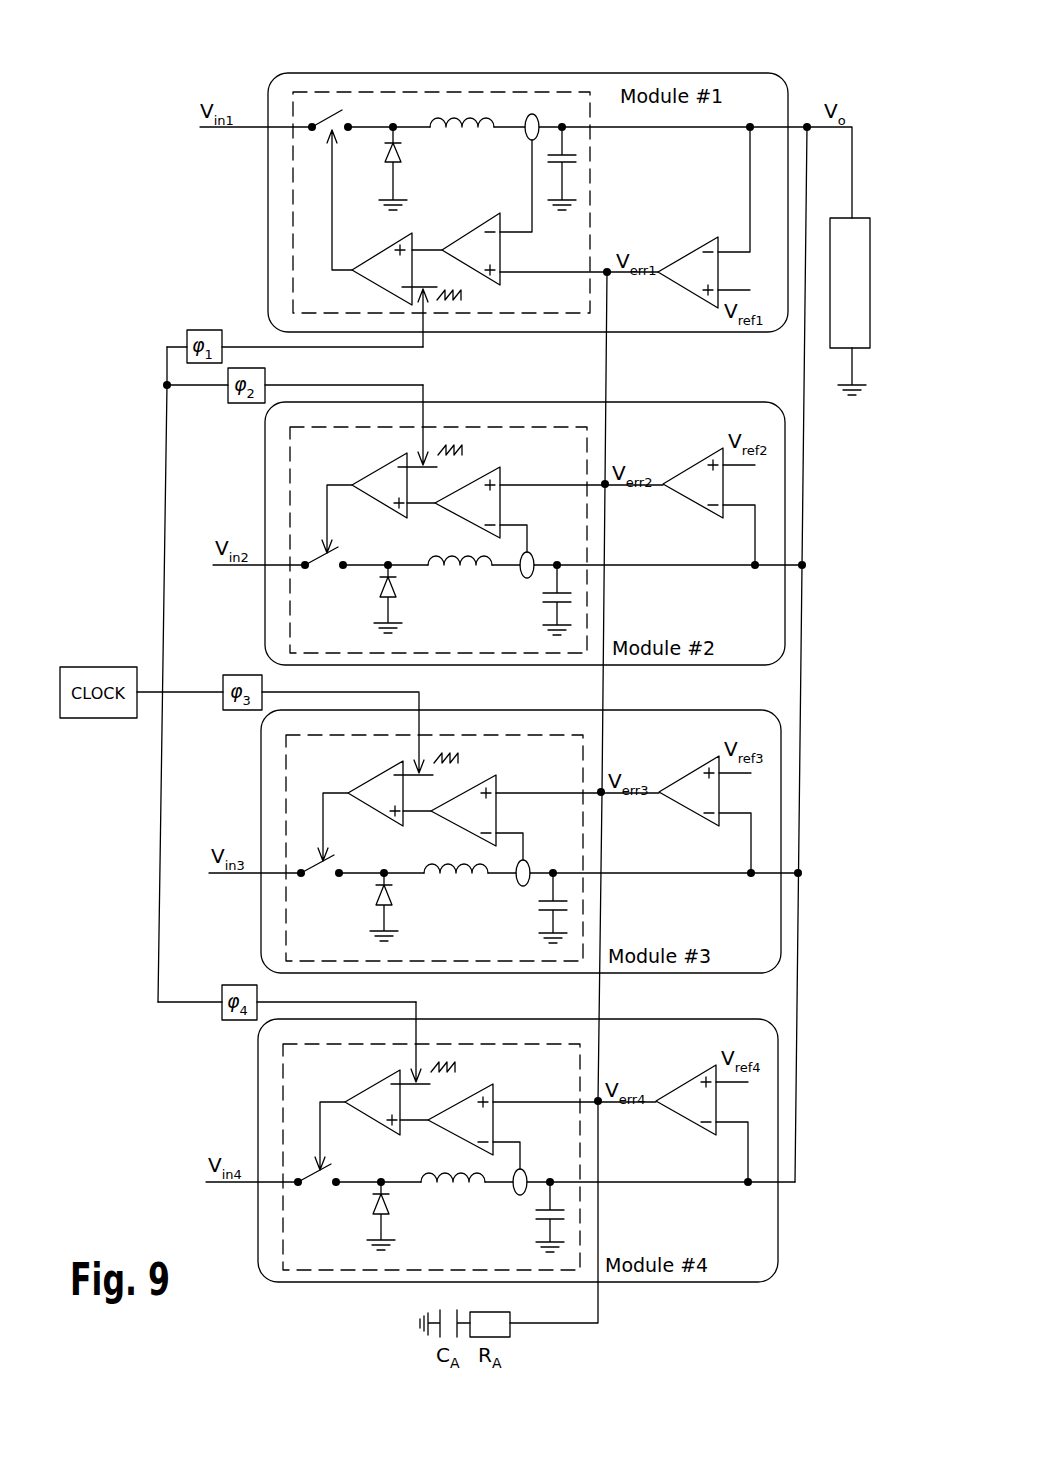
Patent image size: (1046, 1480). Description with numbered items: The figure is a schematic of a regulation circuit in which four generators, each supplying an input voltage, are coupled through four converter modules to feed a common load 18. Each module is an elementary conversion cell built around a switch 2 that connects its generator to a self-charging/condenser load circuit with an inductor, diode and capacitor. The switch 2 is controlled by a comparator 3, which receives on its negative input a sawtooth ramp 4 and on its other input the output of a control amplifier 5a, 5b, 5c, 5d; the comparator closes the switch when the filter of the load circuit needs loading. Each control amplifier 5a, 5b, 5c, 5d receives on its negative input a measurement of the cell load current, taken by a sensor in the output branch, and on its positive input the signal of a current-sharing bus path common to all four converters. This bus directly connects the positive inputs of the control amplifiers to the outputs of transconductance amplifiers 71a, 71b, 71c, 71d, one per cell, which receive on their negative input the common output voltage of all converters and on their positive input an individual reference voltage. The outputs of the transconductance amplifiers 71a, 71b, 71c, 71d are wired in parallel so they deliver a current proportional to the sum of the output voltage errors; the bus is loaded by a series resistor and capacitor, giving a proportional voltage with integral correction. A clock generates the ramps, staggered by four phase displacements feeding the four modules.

The switch 2 is at (336, 112).
The comparator 3 is at (372, 258).
The sawtooth ramp 4 is at (462, 297).
The control amplifier 5a is at (480, 226).
The control amplifier 5b is at (472, 483).
The control amplifier 5c is at (545, 768).
The control amplifier 5d is at (542, 1077).
The transconductance amplifier 71a is at (703, 246).
The transconductance amplifier 71b is at (700, 505).
The transconductance amplifier 71c is at (684, 814).
The transconductance amplifier 71d is at (681, 1123).
The load 18 is at (862, 230).